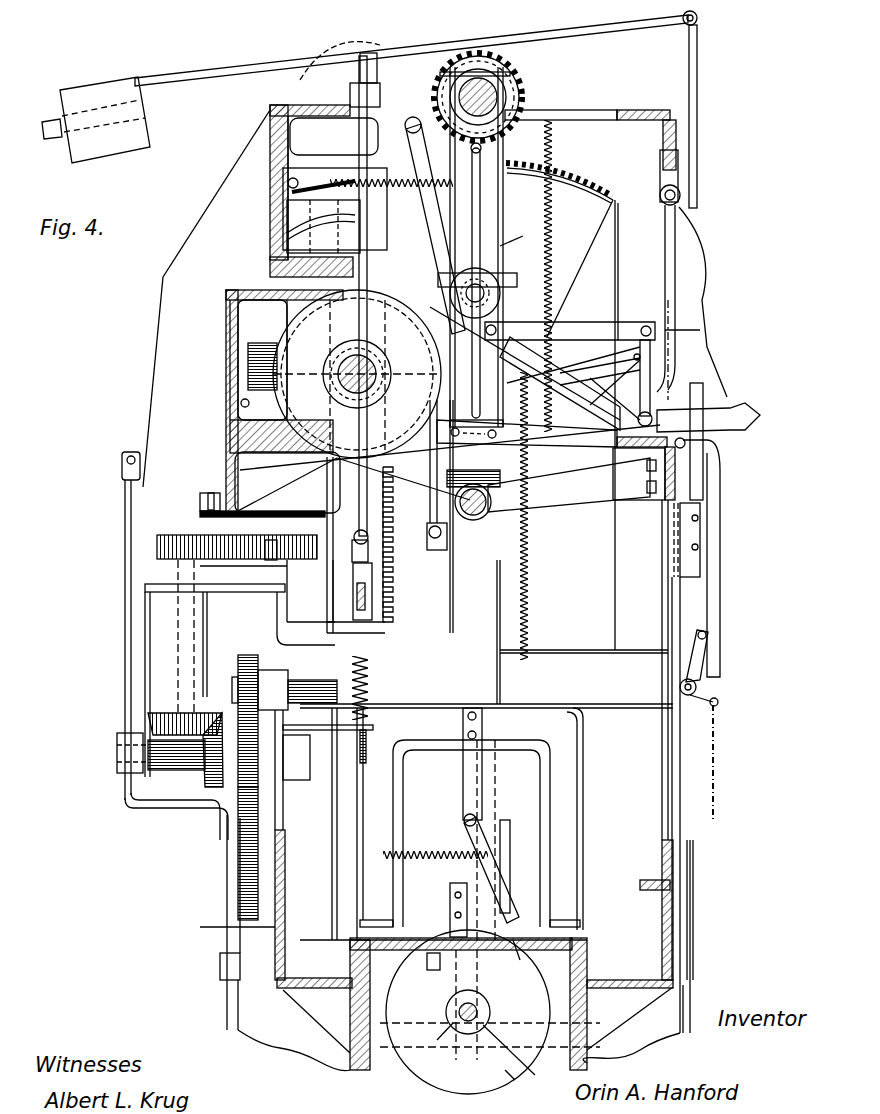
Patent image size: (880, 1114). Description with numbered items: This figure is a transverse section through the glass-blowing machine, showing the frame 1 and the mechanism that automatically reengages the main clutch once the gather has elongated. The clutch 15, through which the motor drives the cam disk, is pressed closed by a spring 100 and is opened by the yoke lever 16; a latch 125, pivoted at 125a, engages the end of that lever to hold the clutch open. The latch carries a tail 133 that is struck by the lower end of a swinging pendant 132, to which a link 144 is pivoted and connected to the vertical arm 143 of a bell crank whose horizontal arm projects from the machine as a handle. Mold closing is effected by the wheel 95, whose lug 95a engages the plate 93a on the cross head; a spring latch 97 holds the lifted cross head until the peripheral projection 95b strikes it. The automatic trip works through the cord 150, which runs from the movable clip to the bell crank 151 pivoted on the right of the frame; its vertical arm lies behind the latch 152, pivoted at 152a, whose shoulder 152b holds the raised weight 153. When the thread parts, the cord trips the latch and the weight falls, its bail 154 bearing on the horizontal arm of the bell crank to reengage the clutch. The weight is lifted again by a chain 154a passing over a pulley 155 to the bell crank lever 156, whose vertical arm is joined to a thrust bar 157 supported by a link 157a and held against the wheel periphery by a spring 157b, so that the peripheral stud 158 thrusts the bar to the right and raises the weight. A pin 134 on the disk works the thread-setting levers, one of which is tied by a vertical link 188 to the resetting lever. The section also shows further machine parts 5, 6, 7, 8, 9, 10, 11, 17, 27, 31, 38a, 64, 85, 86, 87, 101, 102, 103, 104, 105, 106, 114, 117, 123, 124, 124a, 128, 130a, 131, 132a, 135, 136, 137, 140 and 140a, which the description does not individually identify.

The frame 1 is at (275, 924).
The gear 5 is at (238, 790).
The shaft 6 is at (205, 770).
The bevel gear 7 is at (165, 718).
The bearing 8 is at (197, 635).
The block 9 is at (250, 570).
The frame part 10 is at (303, 565).
The pin 11 is at (262, 565).
The clutch 15 is at (200, 513).
The yoke lever 16 is at (330, 470).
The screw 17 is at (255, 360).
The gear 27 is at (238, 872).
The shaft 31 is at (505, 1070).
The post 38a is at (355, 52).
The hub 64 is at (490, 85).
The gear 85 is at (525, 92).
The sector gear 86 is at (560, 250).
The roller 87 is at (473, 520).
The plate 93a is at (440, 935).
The wheel 95 is at (528, 1060).
The lug 95a is at (433, 972).
The peripheral projection 95b is at (518, 960).
The spring latch 97 is at (497, 897).
The spring 100 is at (265, 462).
The plate 101 is at (380, 255).
The arm 102 is at (412, 118).
The rod 103 is at (578, 42).
The lever 104 is at (118, 102).
The rod 105 is at (697, 152).
The rod 106 is at (688, 1010).
The bracket 114 is at (478, 80).
The spring 117 is at (345, 220).
The block 123 is at (447, 540).
The frame 124 is at (148, 585).
The pivot 124a is at (123, 468).
The latch 125 is at (530, 486).
The pivot 125a is at (530, 582).
The slide 128 is at (375, 605).
The link 130a is at (655, 325).
The roller 131 is at (500, 296).
The swinging pendant 132 is at (490, 242).
The bar 132a is at (530, 510).
The tail 133 is at (657, 480).
The pin 134 is at (230, 400).
The link 135 is at (560, 372).
The spring 136 is at (290, 190).
The arc 137 is at (360, 160).
The spring 140 is at (350, 680).
The screw 140a is at (367, 725).
The vertical arm of bell crank 143 is at (655, 350).
The link 144 is at (705, 335).
The cord or chain 150 is at (718, 770).
The bell crank 151 is at (712, 700).
The latch 152 is at (708, 650).
The pivot 152a is at (687, 444).
The shoulder 152b is at (708, 575).
The weight 153 is at (702, 550).
The bail 154 is at (703, 390).
The chain 154a is at (700, 262).
The pulley 155 is at (682, 198).
The bell crank lever 156 is at (715, 412).
The thrust bar 157 is at (598, 380).
The link 157a is at (530, 440).
The spring 157b is at (535, 214).
The peripheral stud 158 is at (240, 545).
The vertical link 188 is at (290, 545).